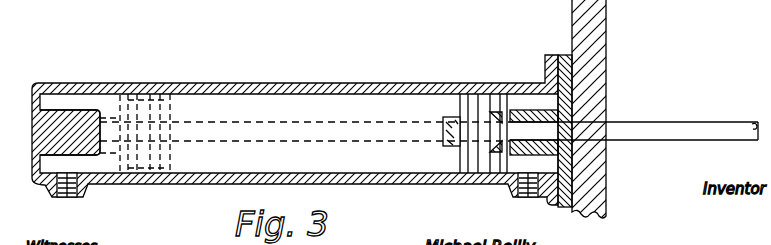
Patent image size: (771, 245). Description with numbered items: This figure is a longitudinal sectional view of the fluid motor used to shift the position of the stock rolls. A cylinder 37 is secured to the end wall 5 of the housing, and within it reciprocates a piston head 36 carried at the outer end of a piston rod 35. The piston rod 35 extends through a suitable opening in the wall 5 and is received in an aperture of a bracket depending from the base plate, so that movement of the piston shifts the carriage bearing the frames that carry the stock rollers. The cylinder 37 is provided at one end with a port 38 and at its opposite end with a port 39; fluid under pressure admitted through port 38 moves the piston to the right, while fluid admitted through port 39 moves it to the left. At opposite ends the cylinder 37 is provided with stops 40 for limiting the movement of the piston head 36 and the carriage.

The end wall 5 is at (610, 53).
The piston rod 35 is at (682, 118).
The piston head 36 is at (475, 100).
The cylinder 37 is at (316, 78).
The port 38 is at (65, 197).
The port 39 is at (522, 197).
The stops 40 is at (78, 120).